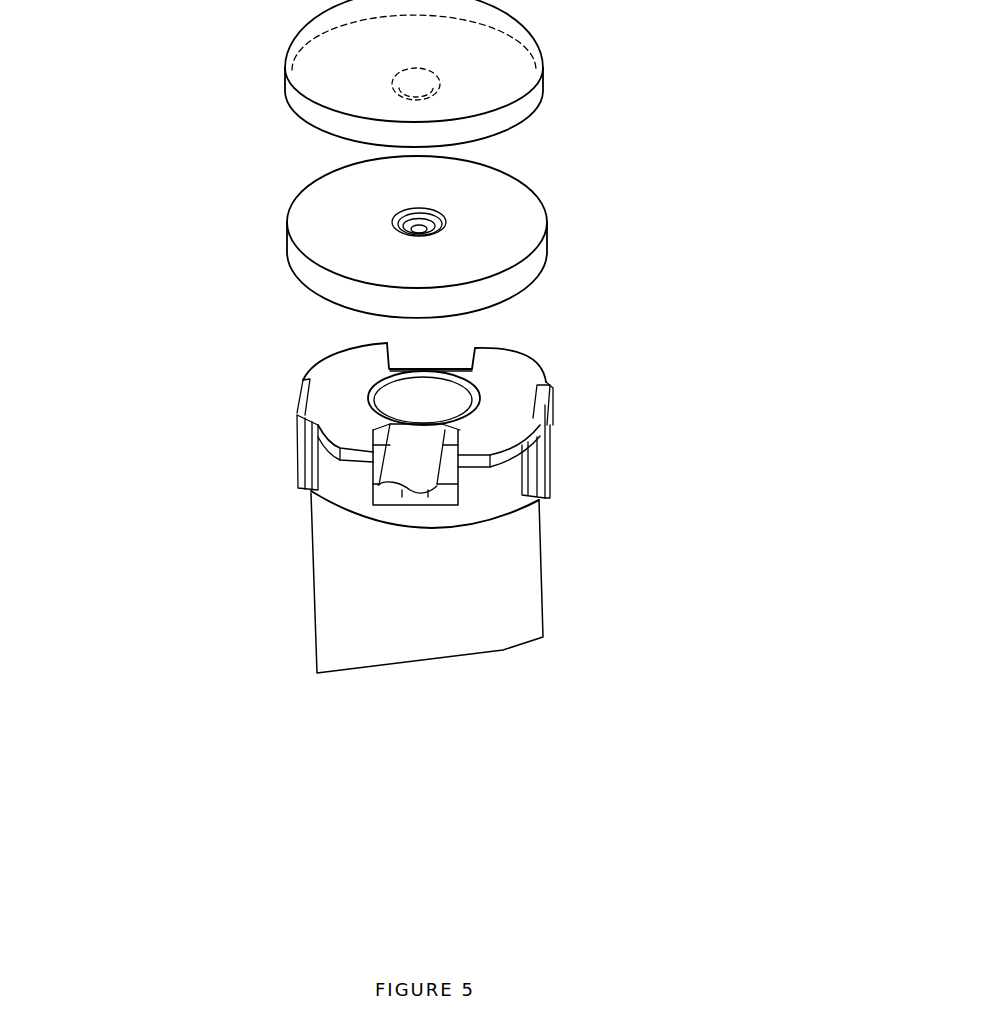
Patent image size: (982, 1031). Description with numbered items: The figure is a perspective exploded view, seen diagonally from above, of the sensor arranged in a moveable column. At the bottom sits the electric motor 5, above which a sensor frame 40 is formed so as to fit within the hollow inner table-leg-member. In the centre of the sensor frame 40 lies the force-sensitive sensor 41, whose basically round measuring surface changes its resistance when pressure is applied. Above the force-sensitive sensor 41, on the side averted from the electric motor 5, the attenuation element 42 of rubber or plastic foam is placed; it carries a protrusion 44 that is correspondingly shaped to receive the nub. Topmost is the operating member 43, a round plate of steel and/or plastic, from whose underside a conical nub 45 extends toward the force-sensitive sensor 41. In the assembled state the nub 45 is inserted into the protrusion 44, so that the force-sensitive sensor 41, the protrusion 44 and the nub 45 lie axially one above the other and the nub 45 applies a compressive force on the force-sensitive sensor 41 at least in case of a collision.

The electric motor 5 is at (328, 565).
The sensor frame 40 is at (332, 417).
The force-sensitive sensor 41 is at (450, 388).
The attenuation element 42 is at (548, 248).
The operating member 43 is at (540, 80).
The protrusion 44 is at (392, 224).
The nub 45 is at (400, 82).